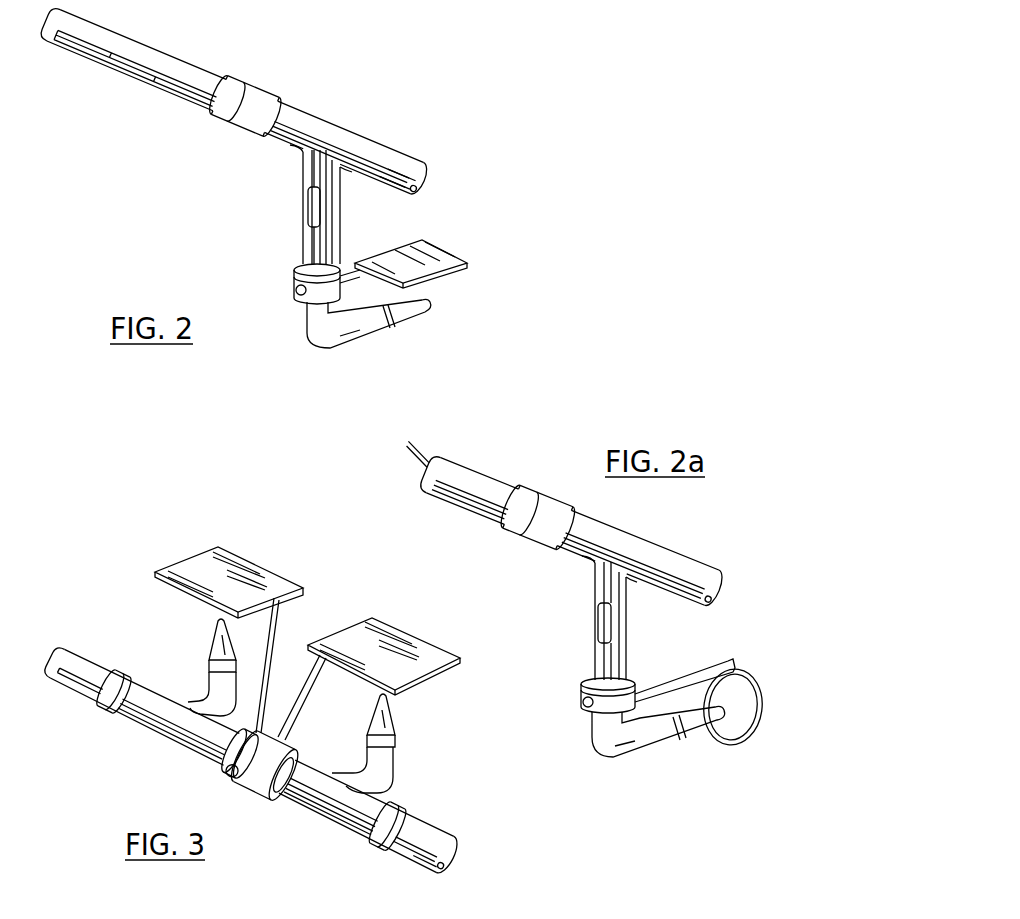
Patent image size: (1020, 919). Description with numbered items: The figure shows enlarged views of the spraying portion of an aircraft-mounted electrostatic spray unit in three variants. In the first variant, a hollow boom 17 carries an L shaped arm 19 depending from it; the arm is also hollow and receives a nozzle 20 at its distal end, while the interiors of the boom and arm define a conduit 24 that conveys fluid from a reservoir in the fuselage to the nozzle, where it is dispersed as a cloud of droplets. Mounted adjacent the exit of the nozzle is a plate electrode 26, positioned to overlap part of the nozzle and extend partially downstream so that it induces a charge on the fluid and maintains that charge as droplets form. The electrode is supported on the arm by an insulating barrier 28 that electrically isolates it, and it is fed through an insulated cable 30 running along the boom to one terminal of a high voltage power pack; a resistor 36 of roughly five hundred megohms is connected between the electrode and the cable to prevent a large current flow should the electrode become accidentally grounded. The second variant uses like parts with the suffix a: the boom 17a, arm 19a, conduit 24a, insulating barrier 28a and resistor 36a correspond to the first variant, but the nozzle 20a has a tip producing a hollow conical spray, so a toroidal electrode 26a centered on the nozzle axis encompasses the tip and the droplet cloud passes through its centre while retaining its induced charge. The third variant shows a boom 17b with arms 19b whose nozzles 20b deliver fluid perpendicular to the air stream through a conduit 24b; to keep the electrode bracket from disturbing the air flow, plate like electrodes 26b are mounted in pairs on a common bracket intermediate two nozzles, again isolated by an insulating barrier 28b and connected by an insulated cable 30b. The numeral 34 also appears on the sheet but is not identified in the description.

In FIG. 2, the hollow boom 17 is at (190, 72).
In FIG. 2, the L shaped arm 19 is at (307, 240).
In FIG. 2, the nozzle 20 is at (417, 316).
In FIG. 2, the conduit 24 is at (420, 194).
In FIG. 2, the plate electrode 26 is at (443, 253).
In FIG. 2, the insulating barrier 28 is at (330, 262).
In FIG. 2, the insulated cable 30 is at (170, 96).
In FIG. 2, the resistor 36 is at (310, 207).
In FIG. 2A, the hollow boom 17a is at (603, 537).
In FIG. 2A, the L shaped arm 19a is at (625, 662).
In FIG. 2A, the nozzle 20a is at (700, 733).
In FIG. 2A, the conduit 24a is at (717, 607).
In FIG. 2A, the toroidal electrode 26a is at (742, 745).
In FIG. 2A, the insulating barrier 28a is at (608, 695).
In FIG. 2A, the resistor 36a is at (600, 623).
In FIG. 3, the hollow boom 17b is at (82, 667).
In FIG. 3, the L shaped arm 19b is at (395, 765).
In FIG. 3, the nozzle 20b is at (218, 641).
In FIG. 3, the conduit 24b is at (452, 863).
In FIG. 3, the plate like electrode 26b is at (253, 570).
In FIG. 3, the insulating barrier 28b is at (295, 760).
In FIG. 3, the insulated cable 30b is at (158, 733).
In FIG. 3, the member 34 is at (391, 910).